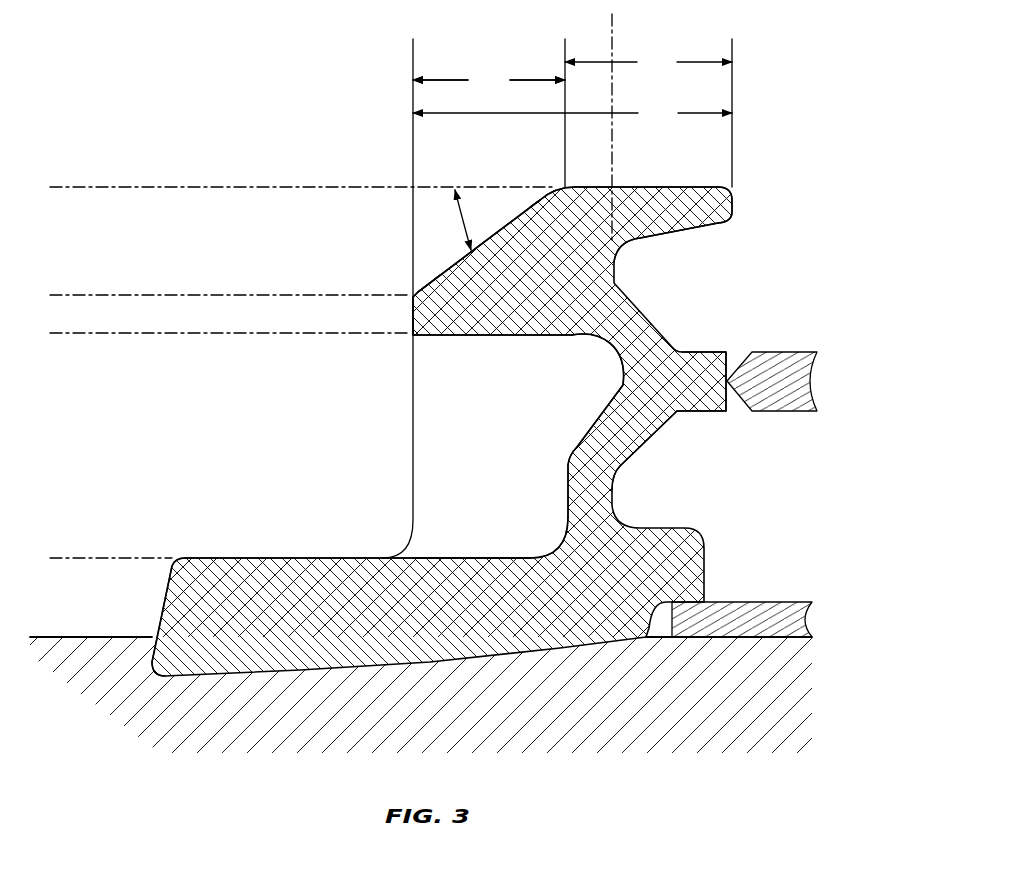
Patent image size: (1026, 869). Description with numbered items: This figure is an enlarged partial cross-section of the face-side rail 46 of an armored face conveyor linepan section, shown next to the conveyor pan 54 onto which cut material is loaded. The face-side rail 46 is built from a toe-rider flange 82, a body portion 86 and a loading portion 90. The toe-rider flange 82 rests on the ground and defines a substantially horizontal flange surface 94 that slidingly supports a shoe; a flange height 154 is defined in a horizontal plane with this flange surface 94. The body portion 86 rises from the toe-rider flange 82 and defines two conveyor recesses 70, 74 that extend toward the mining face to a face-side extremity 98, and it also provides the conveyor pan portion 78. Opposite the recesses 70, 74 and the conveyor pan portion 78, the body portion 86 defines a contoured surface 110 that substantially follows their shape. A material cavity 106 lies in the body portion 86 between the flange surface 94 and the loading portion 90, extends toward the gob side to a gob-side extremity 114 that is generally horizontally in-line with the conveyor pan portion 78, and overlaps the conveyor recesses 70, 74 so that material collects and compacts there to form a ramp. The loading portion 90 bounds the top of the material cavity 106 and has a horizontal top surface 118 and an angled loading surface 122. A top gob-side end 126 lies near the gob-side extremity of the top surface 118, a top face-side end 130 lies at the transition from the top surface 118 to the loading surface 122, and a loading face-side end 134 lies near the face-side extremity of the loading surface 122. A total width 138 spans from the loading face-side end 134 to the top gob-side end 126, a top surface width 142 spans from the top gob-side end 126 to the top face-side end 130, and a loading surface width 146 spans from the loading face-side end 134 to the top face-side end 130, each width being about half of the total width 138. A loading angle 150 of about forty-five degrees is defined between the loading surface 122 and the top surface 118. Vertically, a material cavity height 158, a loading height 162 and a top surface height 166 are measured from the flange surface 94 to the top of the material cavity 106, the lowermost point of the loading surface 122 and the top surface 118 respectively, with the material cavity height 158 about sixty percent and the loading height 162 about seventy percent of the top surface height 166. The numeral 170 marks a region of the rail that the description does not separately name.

The face-side rail 46 is at (748, 168).
The conveyor pan 54 is at (778, 355).
The conveyor recess 70 is at (670, 233).
The conveyor recess 74 is at (642, 447).
The conveyor pan portion 78 is at (713, 398).
The toe-rider flange 82 is at (155, 620).
The body portion 86 is at (573, 466).
The loading portion 90 is at (510, 176).
The flange surface 94 is at (258, 557).
The face-side extremity 98 is at (611, 45).
The material cavity 106 is at (498, 392).
The contoured surface 110 is at (572, 490).
The gob-side extremity 114 is at (622, 383).
The top surface 118 is at (643, 187).
The loading surface 122 is at (478, 257).
The top gob-side end 126 is at (740, 193).
The top face-side end 130 is at (557, 176).
The loading face-side end 134 is at (410, 292).
The total width 138 is at (572, 114).
The top surface width 142 is at (648, 63).
The loading surface width 146 is at (489, 81).
The loading angle 150 is at (478, 218).
The flange height 154 is at (105, 557).
The material cavity height 158 is at (105, 334).
The loading height 162 is at (105, 294).
The top surface height 166 is at (105, 186).
The arm region 170 is at (433, 229).